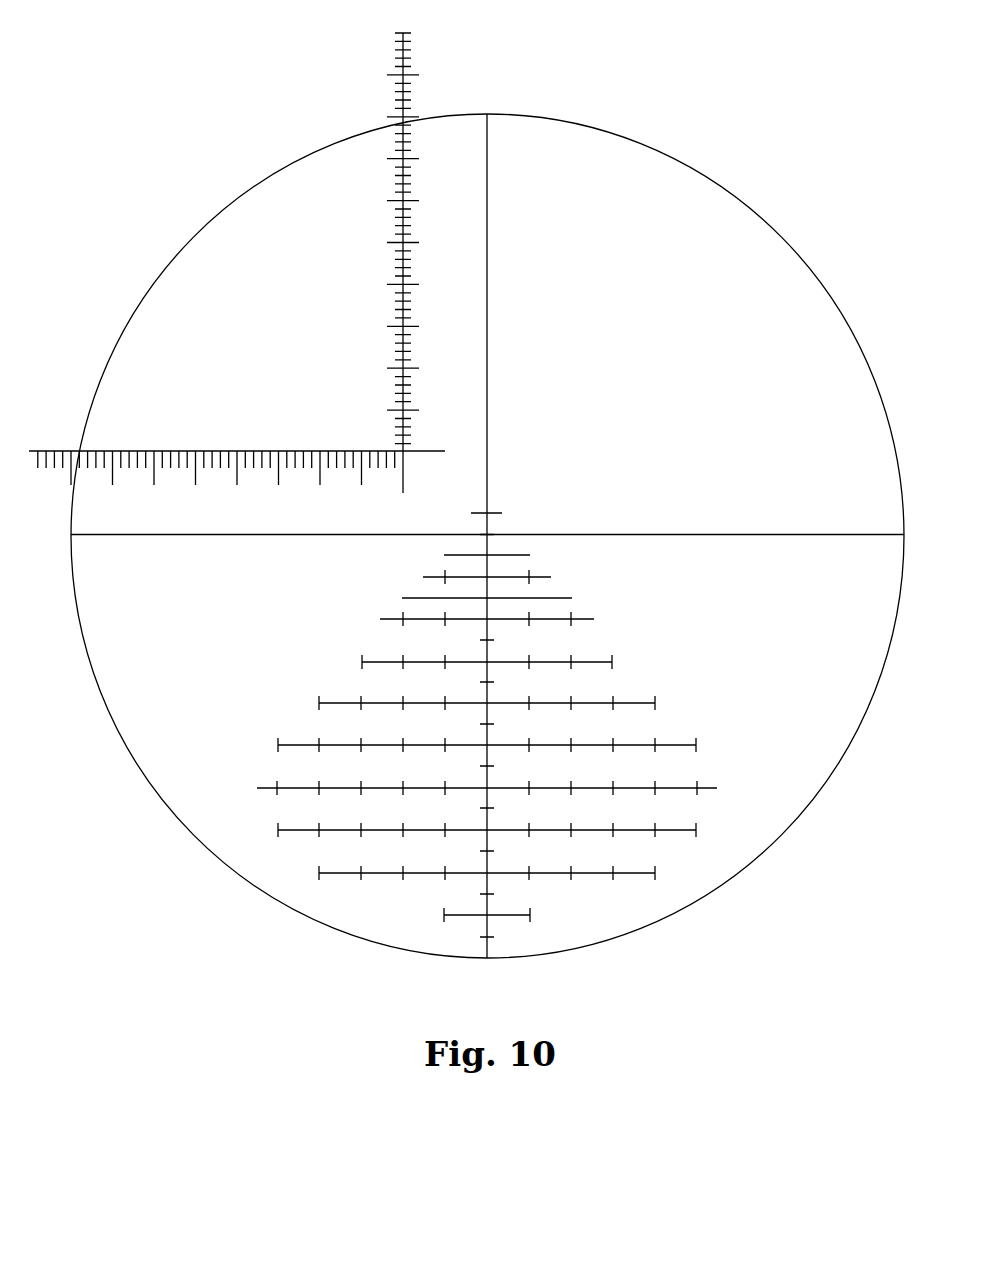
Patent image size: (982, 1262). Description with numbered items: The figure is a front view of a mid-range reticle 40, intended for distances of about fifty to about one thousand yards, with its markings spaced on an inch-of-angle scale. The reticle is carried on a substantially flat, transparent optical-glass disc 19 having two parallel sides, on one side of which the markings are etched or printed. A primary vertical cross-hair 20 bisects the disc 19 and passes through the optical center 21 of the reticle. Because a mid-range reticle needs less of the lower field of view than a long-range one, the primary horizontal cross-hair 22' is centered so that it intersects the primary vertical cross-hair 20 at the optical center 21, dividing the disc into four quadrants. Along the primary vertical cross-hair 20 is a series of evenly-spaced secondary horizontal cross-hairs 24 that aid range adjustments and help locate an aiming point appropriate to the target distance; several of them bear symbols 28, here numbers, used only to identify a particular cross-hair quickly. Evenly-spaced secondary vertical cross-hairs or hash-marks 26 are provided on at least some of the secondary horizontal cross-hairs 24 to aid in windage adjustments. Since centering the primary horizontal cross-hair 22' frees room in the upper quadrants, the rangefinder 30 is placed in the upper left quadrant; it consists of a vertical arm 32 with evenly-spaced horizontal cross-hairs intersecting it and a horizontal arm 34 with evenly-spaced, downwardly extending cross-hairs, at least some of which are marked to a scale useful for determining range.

The disc 19 is at (190, 814).
The mid-range reticle 40 is at (777, 200).
The primary vertical cross-hair 20 is at (489, 220).
The optical center 21 is at (489, 535).
The primary horizontal cross-hair 22' is at (487, 500).
The secondary horizontal cross-hairs 24 is at (643, 698).
The secondary vertical cross-hairs or hash-marks 26 is at (320, 690).
The symbols 28 is at (741, 782).
The rangefinder 30 is at (237, 269).
The vertical arm 32 is at (384, 65).
The horizontal arm 34 is at (134, 450).